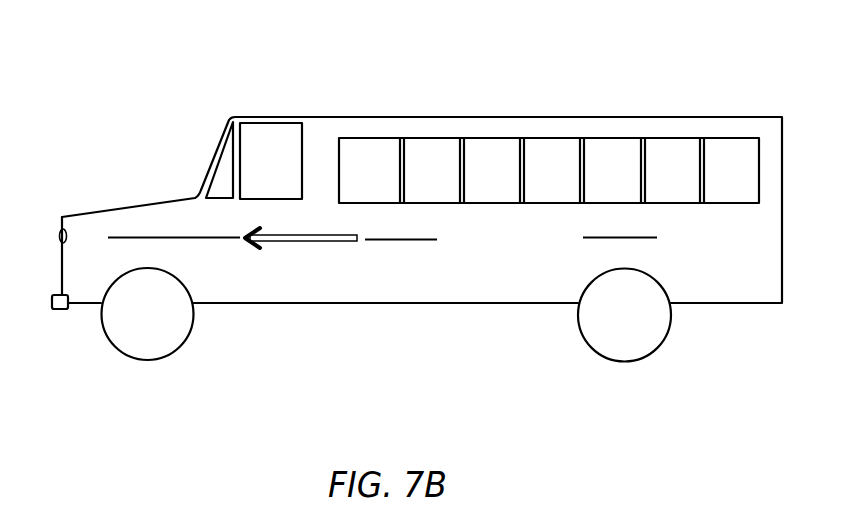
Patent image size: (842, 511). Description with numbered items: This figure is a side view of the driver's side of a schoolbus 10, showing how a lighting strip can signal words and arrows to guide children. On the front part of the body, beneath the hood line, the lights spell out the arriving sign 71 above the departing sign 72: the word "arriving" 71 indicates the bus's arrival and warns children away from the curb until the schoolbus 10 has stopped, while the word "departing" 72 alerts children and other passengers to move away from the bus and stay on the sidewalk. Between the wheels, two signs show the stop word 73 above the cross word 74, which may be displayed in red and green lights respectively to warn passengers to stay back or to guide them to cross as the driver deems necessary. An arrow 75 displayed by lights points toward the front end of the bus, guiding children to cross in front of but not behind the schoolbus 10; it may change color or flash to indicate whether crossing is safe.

The schoolbus 10 is at (538, 102).
The arriving sign 71 is at (135, 216).
The departing sign 72 is at (105, 268).
The stop word 73 is at (583, 238).
The cross word 74 is at (392, 267).
The arrow 75 is at (312, 244).